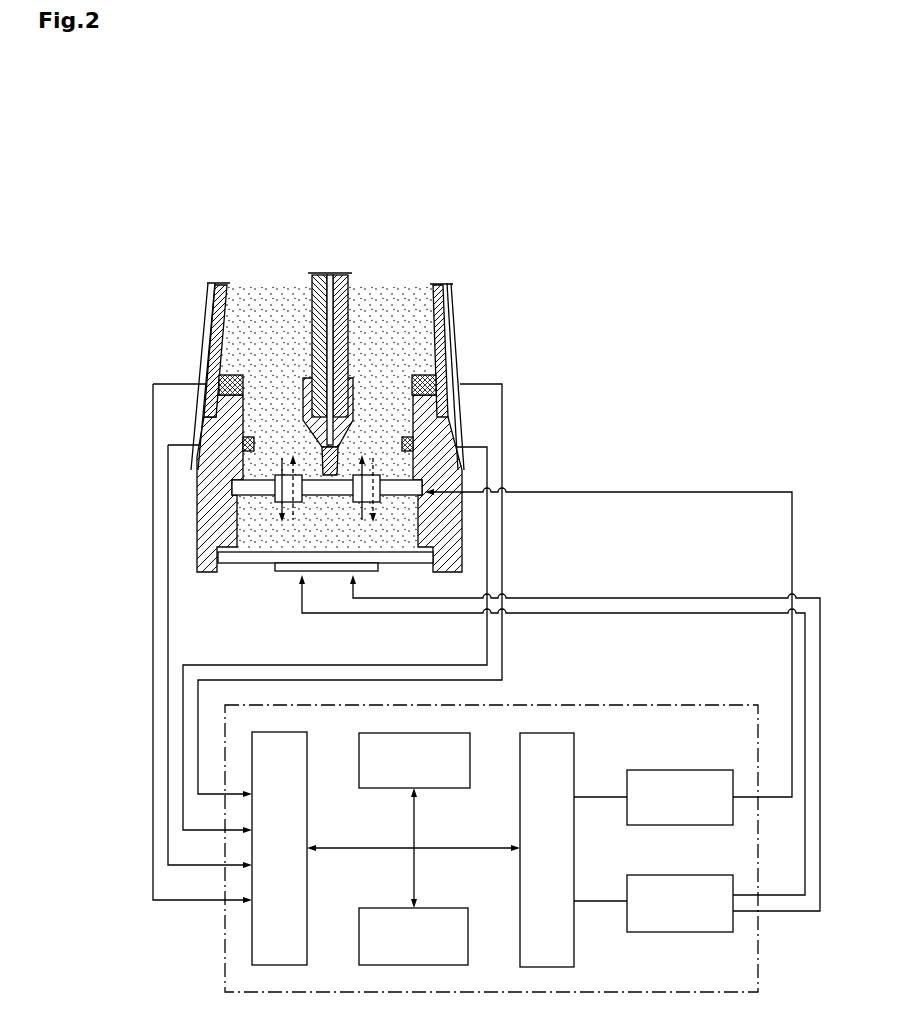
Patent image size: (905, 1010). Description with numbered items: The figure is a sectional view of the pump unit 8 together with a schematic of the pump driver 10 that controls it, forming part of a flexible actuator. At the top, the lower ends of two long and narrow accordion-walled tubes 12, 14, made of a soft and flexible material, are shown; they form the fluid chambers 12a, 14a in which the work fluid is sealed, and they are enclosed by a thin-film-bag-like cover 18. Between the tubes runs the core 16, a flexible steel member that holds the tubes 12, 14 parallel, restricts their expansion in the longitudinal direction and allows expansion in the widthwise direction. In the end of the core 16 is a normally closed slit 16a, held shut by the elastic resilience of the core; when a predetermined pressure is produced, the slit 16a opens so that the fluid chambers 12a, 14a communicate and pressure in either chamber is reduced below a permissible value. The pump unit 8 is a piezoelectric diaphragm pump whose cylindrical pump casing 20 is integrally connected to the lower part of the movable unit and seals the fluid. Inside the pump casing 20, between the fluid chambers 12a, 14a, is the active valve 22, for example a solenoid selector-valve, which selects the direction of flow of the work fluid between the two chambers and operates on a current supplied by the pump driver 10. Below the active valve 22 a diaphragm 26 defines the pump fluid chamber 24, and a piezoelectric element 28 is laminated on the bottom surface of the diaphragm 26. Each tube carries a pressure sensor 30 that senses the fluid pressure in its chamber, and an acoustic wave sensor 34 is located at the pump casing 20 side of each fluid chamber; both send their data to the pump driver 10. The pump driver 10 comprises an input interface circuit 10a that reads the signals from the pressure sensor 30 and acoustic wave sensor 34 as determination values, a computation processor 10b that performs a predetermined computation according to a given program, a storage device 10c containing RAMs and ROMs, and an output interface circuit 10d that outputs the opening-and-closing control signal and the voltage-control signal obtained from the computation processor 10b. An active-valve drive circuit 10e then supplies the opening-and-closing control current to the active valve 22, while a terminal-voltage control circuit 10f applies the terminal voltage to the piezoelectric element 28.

The pump unit 8 is at (326, 561).
The pump driver 10 is at (491, 815).
The input interface circuit 10a is at (307, 815).
The computation processor 10b is at (452, 788).
The storage device 10c is at (455, 908).
The output interface circuit 10d is at (574, 748).
The active-valve drive circuit 10e is at (690, 770).
The terminal-voltage control circuit 10f is at (690, 875).
The tube 12 is at (213, 297).
The fluid chamber 12a is at (289, 346).
The tube 14 is at (447, 303).
The fluid chamber 14a is at (407, 346).
The core 16 is at (328, 416).
The slit 16a is at (331, 477).
The cover 18 is at (453, 337).
The pump casing 20 is at (197, 507).
The active valve 22 is at (398, 496).
The pump fluid chamber 24 is at (323, 539).
The diaphragm 26 is at (245, 564).
The piezoelectric element 28 is at (285, 572).
The pressure sensor 30 is at (245, 440).
The acoustic wave sensor 34 is at (222, 376).